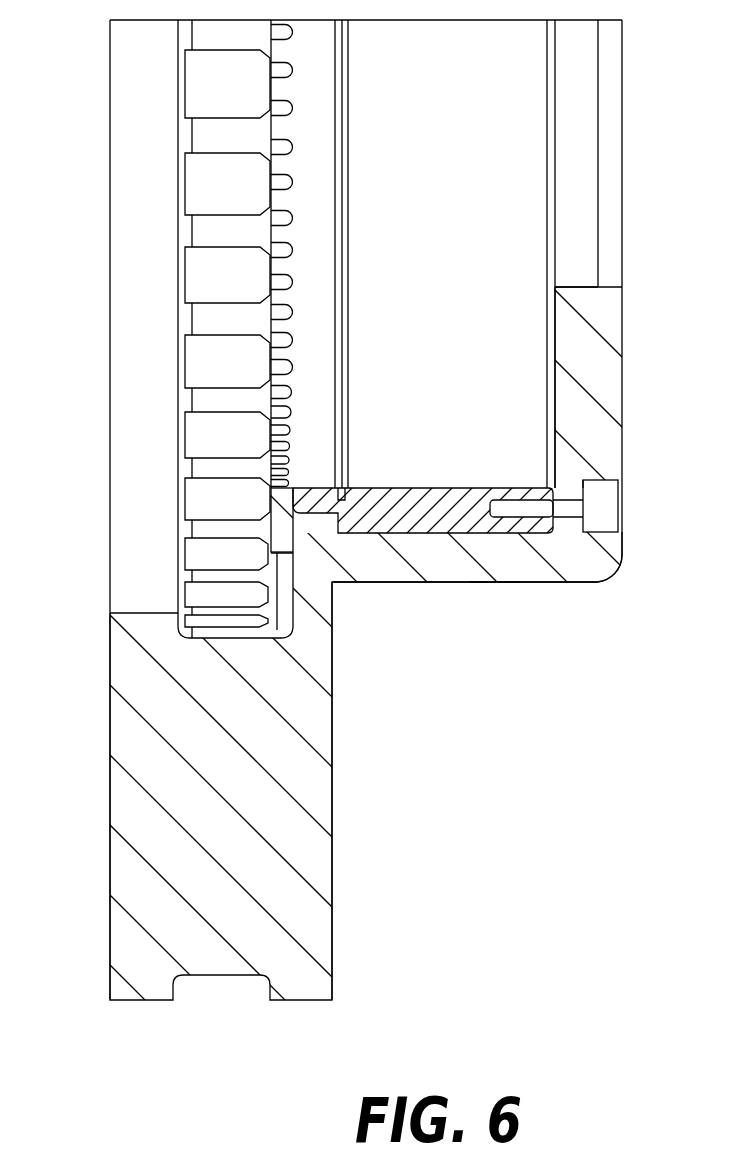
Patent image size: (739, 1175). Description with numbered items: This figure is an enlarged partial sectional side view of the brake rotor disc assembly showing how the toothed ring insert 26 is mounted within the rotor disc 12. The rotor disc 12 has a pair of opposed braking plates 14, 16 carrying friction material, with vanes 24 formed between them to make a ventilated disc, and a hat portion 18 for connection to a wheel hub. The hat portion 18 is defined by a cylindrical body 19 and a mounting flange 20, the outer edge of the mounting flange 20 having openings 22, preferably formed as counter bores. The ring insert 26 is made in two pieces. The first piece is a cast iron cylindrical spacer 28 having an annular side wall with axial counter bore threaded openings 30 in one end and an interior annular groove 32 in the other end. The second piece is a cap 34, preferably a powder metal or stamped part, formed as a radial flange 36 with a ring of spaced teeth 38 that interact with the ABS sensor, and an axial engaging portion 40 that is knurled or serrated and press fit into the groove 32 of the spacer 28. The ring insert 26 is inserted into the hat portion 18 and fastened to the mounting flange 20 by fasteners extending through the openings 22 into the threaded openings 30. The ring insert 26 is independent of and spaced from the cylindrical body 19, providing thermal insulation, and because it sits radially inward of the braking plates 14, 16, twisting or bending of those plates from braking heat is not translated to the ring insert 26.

The rotor disc 12 is at (322, 943).
The braking plate 14 is at (332, 813).
The braking plate 16 is at (110, 800).
The hat portion 18 is at (573, 583).
The cylindrical body 19 is at (493, 567).
The mounting flange 20 is at (613, 403).
The openings 22 is at (603, 483).
The vanes 24 is at (203, 577).
The toothed ring insert 26 is at (405, 255).
The cylindrical spacer 28 is at (400, 517).
The threaded openings 30 is at (530, 522).
The interior annular groove 32 is at (318, 508).
The cap 34 is at (305, 437).
The radial flange 36 is at (270, 530).
The teeth 38 is at (282, 380).
The axial engaging portion 40 is at (342, 503).